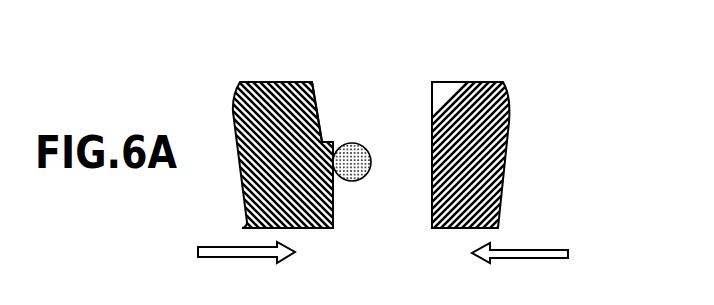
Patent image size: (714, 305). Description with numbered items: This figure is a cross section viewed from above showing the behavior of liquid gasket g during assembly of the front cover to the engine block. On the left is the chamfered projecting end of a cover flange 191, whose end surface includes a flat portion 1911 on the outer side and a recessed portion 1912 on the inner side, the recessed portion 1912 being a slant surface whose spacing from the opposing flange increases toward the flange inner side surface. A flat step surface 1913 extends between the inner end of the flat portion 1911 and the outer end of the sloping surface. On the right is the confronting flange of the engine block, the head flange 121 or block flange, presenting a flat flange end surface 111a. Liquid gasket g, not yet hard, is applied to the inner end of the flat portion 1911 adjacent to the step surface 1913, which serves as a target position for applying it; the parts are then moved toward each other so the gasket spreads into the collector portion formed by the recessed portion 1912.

The cover flange 191 is at (263, 81).
The recessed portion 1912 is at (313, 100).
The step surface 1913 is at (327, 140).
The flat portion 1911 is at (333, 200).
The liquid gasket g is at (368, 176).
The flange end surface 111a is at (432, 101).
The front head flange 121 is at (478, 82).